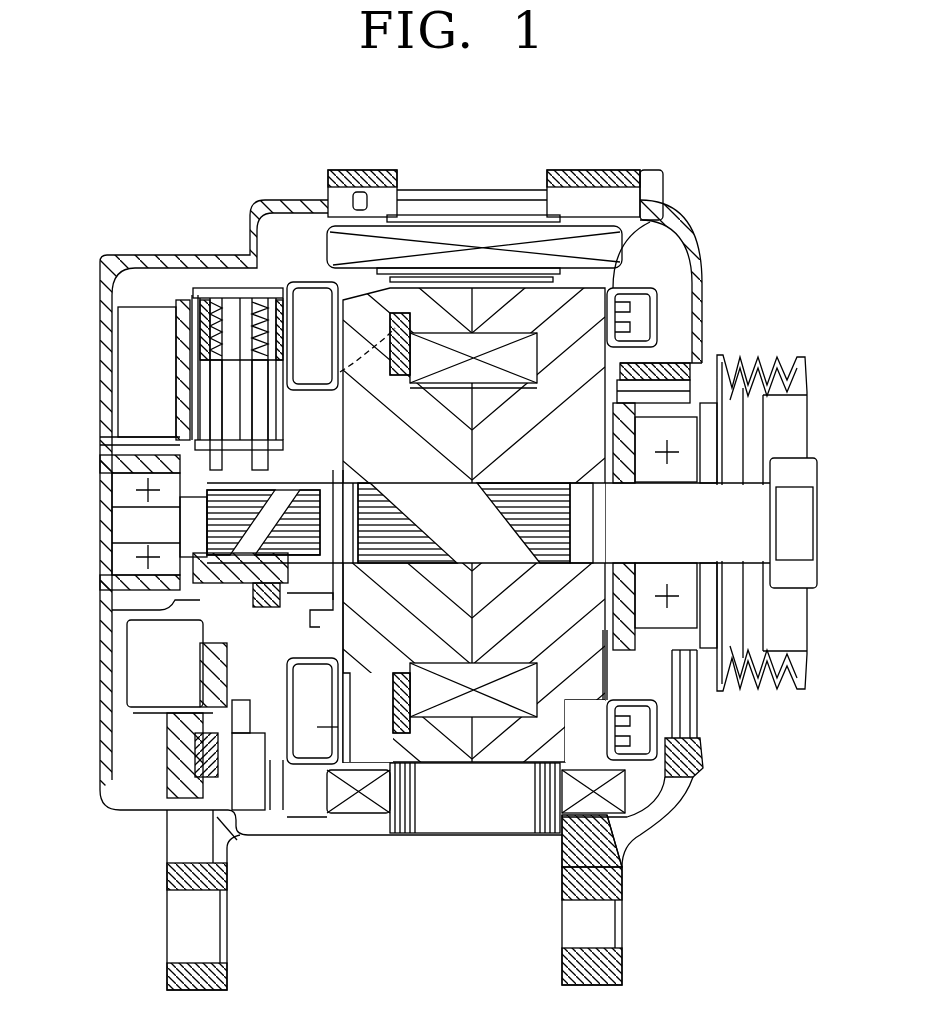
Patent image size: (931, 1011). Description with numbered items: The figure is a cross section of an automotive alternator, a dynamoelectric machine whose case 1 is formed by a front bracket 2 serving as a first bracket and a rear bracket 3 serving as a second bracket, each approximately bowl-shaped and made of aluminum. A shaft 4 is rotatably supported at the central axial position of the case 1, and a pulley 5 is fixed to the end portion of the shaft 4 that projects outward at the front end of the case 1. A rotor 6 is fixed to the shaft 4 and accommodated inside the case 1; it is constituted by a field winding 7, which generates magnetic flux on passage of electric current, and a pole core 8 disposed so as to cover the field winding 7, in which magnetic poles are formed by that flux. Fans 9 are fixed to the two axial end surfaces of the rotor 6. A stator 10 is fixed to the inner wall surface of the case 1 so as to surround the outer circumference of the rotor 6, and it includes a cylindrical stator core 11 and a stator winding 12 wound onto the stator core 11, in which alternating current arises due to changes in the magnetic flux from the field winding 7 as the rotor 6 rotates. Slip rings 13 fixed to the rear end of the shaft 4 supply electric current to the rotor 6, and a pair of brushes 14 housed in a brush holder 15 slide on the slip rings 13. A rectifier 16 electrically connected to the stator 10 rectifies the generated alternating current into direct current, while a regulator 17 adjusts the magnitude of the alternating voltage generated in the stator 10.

The case 1 is at (705, 772).
The front bracket 2 is at (707, 758).
The rear bracket 3 is at (123, 807).
The shaft 4 is at (730, 528).
The pulley 5 is at (777, 400).
The rotor 6 is at (443, 123).
The field winding 7 is at (473, 343).
The pole core 8 is at (523, 310).
The fans 9 is at (640, 303).
The stator 10 is at (448, 902).
The stator core 11 is at (470, 835).
The stator winding 12 is at (580, 807).
The slip rings 13 is at (210, 505).
The brushes 14 is at (253, 430).
The brush holder 15 is at (192, 288).
The rectifier 16 is at (153, 715).
The regulator 17 is at (170, 353).